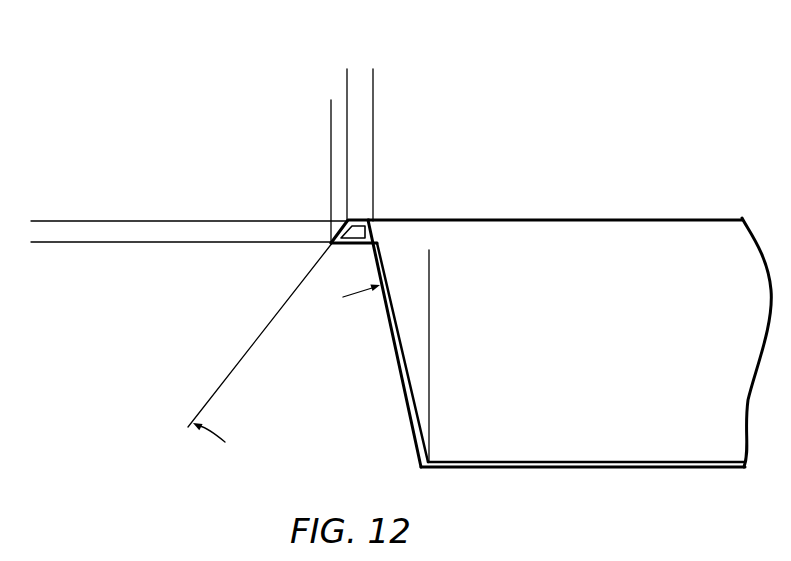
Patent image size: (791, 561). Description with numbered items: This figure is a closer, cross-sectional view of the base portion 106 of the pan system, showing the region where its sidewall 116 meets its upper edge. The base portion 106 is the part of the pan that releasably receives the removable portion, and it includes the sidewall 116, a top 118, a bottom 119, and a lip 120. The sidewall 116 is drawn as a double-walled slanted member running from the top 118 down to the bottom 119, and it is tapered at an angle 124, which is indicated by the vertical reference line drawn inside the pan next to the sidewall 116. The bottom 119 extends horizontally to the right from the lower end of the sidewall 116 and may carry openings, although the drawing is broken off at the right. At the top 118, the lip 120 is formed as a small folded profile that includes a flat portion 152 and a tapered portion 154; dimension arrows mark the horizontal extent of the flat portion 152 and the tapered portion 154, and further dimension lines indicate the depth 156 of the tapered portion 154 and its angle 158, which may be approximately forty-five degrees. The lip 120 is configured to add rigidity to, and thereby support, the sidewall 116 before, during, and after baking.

The base portion 106 is at (600, 88).
The sidewall 116 is at (400, 372).
The top 118 is at (357, 218).
The bottom 119 is at (628, 460).
The lip 120 is at (308, 213).
The angle 124 is at (438, 283).
The flat portion 152 is at (392, 78).
The tapered portion 154 is at (367, 110).
The depth 156 is at (43, 266).
The angle 158 is at (217, 392).